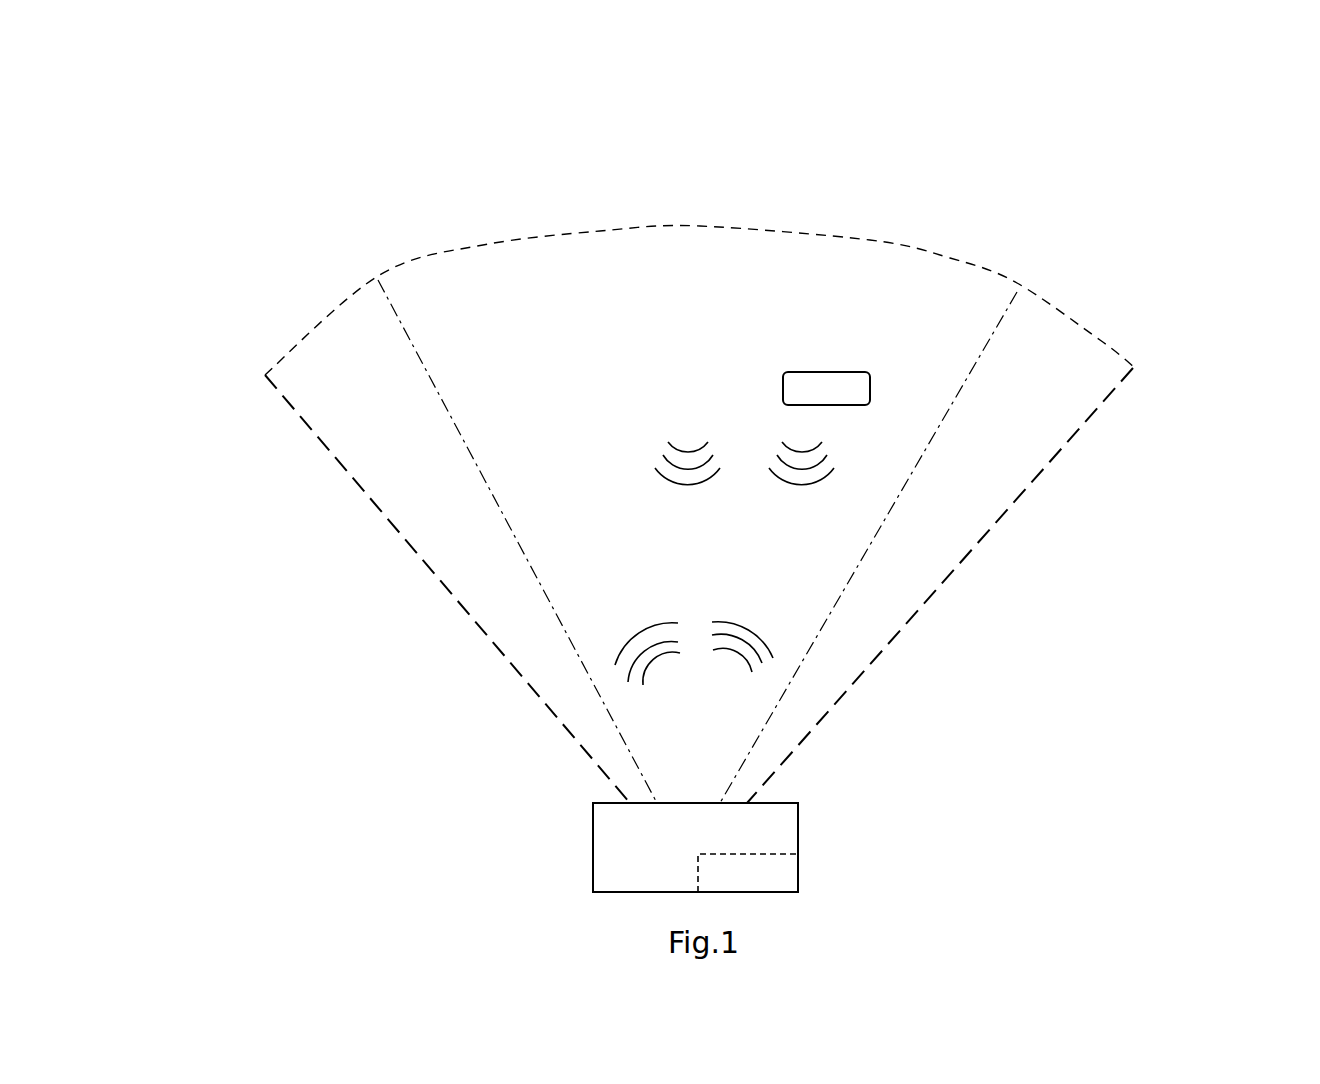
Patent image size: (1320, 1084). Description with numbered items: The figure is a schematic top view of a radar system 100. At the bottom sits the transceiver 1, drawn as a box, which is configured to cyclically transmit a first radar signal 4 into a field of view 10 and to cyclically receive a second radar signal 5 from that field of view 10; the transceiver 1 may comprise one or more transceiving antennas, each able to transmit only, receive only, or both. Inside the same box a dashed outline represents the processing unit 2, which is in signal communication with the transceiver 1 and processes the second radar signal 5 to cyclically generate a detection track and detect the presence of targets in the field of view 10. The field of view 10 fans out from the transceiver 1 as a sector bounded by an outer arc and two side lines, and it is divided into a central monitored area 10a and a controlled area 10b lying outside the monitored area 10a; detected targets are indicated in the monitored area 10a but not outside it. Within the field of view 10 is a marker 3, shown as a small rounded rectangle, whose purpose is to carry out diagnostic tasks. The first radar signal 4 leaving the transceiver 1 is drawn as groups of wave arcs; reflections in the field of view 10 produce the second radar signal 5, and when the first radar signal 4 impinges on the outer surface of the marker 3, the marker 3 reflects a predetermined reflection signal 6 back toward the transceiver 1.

The radar system 100 is at (228, 245).
The field of view 10 is at (823, 322).
The monitored area 10a is at (482, 245).
The controlled area 10b is at (1063, 392).
The transceiver 1 is at (618, 853).
The processing unit 2 is at (798, 884).
The marker 3 is at (800, 388).
The first radar signal 4 is at (640, 662).
The second radar signal 5 is at (683, 463).
The predetermined reflection signal 6 is at (833, 472).